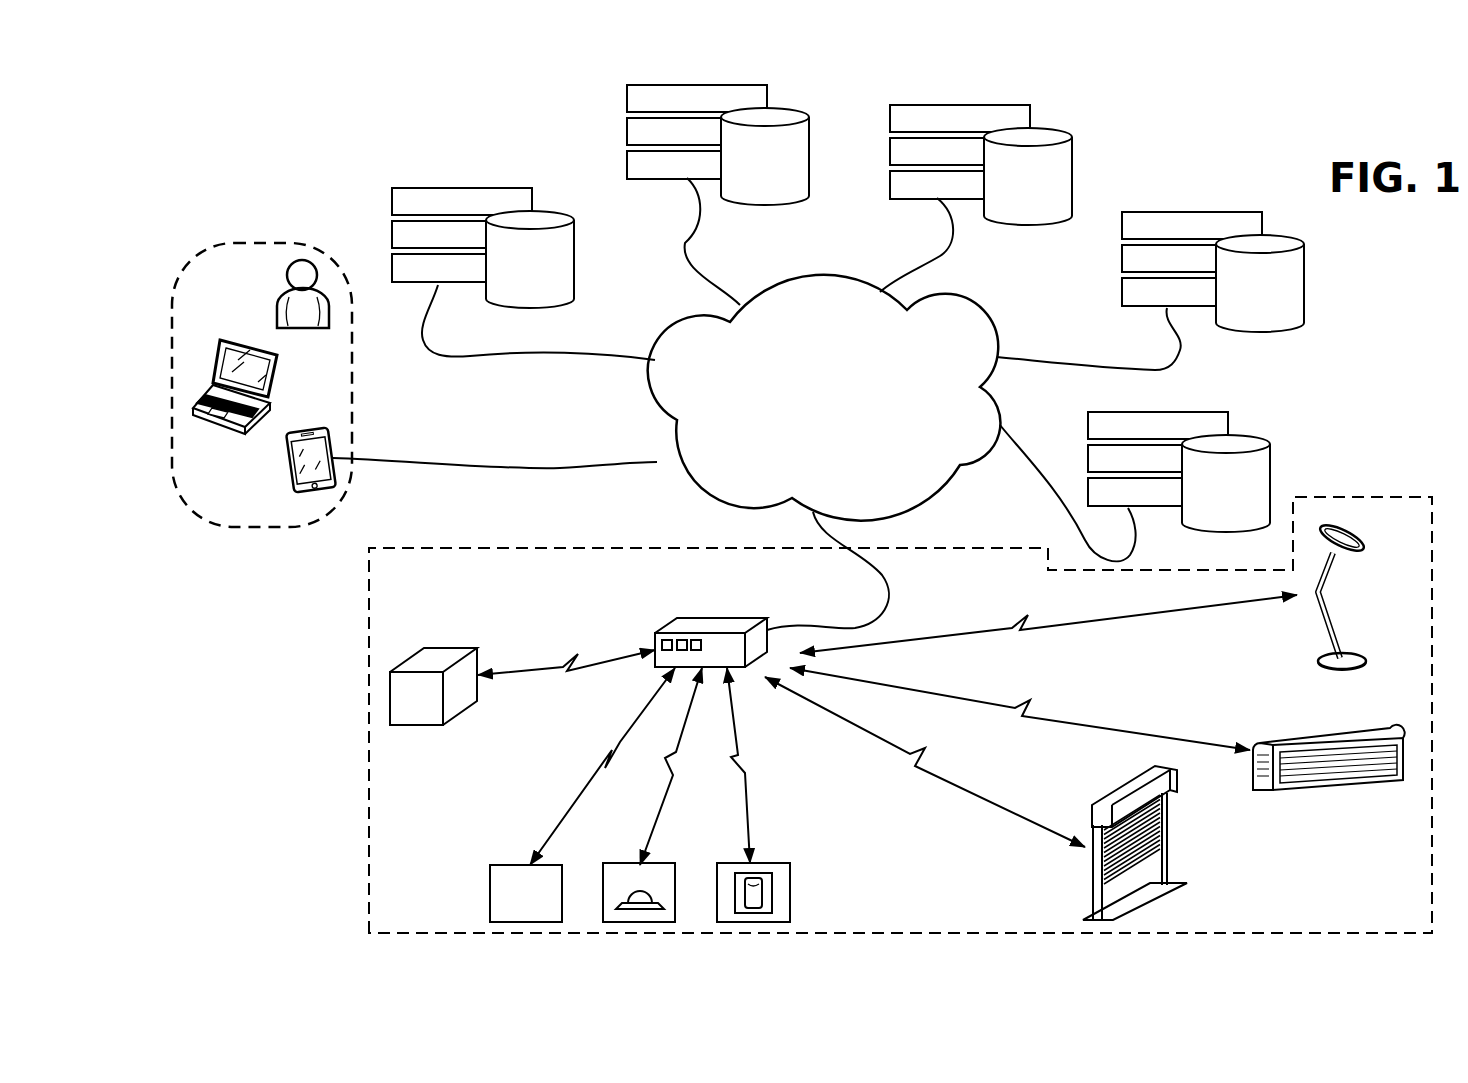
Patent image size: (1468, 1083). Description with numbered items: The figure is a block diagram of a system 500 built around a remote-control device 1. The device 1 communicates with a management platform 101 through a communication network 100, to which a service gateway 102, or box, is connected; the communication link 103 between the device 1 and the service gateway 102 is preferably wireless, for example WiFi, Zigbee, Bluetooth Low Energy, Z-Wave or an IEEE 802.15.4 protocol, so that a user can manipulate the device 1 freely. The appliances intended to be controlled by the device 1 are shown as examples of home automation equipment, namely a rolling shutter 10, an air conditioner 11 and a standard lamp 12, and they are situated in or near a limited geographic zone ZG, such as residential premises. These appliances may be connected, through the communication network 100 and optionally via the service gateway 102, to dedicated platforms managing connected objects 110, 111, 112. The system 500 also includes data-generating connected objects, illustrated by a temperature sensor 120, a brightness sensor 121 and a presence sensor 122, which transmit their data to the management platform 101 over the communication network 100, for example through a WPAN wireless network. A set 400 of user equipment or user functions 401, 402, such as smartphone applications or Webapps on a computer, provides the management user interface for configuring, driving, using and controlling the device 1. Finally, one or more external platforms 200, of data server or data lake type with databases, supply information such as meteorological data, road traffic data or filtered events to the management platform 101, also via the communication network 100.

The device 1 is at (417, 650).
The rolling shutter 10 is at (1093, 897).
The air conditioner 11 is at (1363, 783).
The standard lamp 12 is at (1340, 635).
The communication network 100 is at (803, 409).
The management platform 101 is at (1208, 410).
The service gateway 102 is at (672, 620).
The communication link 103 is at (555, 658).
The dedicated platform managing connected objects 110 is at (1217, 210).
The dedicated platform managing connected objects 111 is at (1005, 104).
The dedicated platform managing connected objects 112 is at (653, 85).
The temperature sensor 120 is at (500, 865).
The brightness sensor 121 is at (623, 863).
The presence sensor 122 is at (775, 863).
The external platform 200 is at (417, 187).
The set of equipment or user functions 400 is at (266, 420).
The user equipment or user function 401 is at (333, 438).
The user equipment or user function 402 is at (200, 395).
The system 500 is at (275, 170).
The limited geographic zone ZG is at (369, 662).